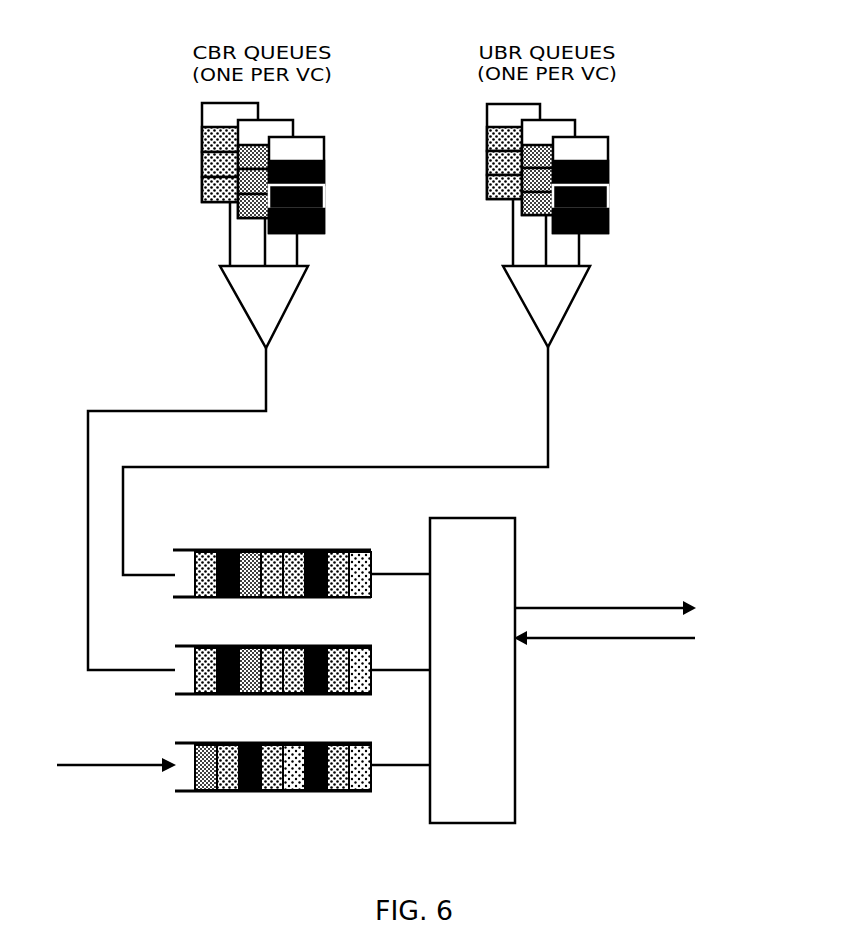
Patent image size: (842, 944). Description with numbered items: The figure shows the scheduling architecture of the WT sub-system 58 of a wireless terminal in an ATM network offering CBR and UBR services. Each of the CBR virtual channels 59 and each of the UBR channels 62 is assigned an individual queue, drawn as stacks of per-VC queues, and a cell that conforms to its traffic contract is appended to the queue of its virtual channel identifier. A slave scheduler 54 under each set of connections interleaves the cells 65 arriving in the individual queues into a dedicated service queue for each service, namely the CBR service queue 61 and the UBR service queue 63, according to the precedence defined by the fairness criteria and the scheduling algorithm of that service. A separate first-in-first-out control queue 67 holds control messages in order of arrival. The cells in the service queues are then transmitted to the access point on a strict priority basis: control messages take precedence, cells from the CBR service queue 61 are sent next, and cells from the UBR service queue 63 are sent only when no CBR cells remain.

The CBR virtual channels 59 is at (182, 106).
The UBR channels 62 is at (606, 166).
The slave scheduler 54 is at (249, 298).
The WT sub-system 58 is at (762, 275).
The cells 65 is at (207, 553).
The UBR service queue 63 is at (362, 547).
The CBR service queue 61 is at (178, 695).
The control queue 67 is at (252, 793).